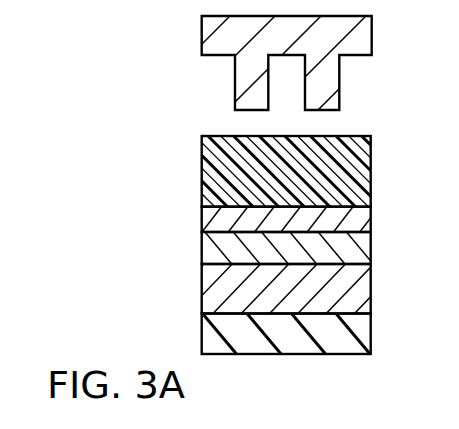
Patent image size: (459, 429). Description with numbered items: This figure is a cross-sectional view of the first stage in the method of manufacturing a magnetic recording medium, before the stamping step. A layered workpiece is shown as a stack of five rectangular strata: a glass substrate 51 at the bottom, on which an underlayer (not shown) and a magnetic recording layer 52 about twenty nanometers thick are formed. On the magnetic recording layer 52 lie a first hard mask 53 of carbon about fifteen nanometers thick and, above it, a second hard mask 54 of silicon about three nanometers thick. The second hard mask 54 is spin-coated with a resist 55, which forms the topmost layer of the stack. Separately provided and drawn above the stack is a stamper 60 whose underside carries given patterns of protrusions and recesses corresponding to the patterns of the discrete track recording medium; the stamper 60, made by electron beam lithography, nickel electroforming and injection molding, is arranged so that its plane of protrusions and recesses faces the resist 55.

The stamper 60 is at (208, 34).
The resist 55 is at (205, 172).
The second hard mask 54 is at (205, 220).
The first hard mask 53 is at (205, 250).
The magnetic recording layer 52 is at (202, 292).
The glass substrate 51 is at (203, 338).